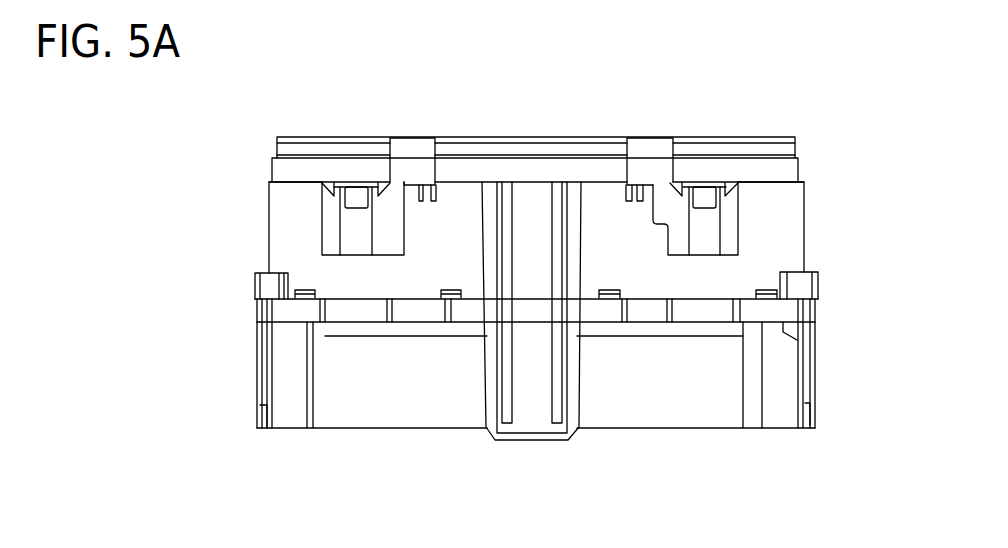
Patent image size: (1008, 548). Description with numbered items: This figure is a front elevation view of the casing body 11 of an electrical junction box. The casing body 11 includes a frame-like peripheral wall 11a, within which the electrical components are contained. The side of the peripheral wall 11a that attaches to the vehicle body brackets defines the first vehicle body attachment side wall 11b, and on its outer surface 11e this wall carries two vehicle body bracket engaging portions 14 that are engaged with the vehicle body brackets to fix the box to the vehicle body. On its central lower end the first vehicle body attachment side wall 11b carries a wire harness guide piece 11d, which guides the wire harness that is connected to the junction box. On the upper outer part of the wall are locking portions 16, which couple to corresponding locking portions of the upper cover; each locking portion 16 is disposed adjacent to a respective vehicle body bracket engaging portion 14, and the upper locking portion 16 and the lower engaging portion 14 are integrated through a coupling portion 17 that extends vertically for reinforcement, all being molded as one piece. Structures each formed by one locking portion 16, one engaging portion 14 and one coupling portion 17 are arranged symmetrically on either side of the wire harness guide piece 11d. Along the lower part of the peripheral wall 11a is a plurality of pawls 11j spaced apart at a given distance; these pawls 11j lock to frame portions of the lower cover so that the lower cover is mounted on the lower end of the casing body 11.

The casing body 11 is at (252, 83).
The peripheral wall 11a is at (303, 267).
The first vehicle body attachment side wall 11b is at (258, 272).
The wire harness guide piece 11d is at (530, 407).
The outer surface 11e is at (768, 244).
The pawls 11j is at (305, 300).
The vehicle body bracket engaging portion 14 is at (332, 209).
The locking portion 16 is at (417, 152).
The coupling portion 17 is at (397, 192).